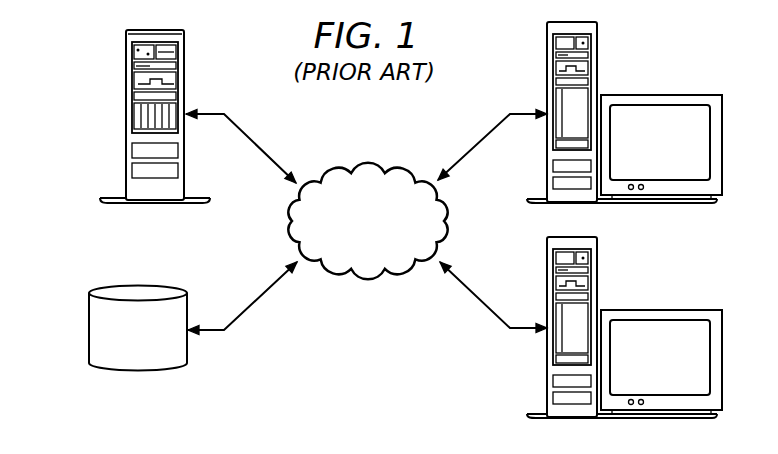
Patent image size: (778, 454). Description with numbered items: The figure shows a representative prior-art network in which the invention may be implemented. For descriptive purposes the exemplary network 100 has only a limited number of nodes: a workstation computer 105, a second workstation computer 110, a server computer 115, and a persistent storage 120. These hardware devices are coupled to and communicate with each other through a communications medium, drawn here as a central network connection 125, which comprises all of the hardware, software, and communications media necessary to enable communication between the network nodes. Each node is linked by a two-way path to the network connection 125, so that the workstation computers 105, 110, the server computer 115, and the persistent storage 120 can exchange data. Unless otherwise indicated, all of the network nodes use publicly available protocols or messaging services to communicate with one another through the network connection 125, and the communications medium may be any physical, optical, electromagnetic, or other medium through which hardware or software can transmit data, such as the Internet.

The network 100 is at (405, 346).
The workstation computer 105 is at (660, 95).
The workstation computer 110 is at (660, 310).
The server computer 115 is at (126, 92).
The persistent storage 120 is at (88, 330).
The network connection 125 is at (345, 236).